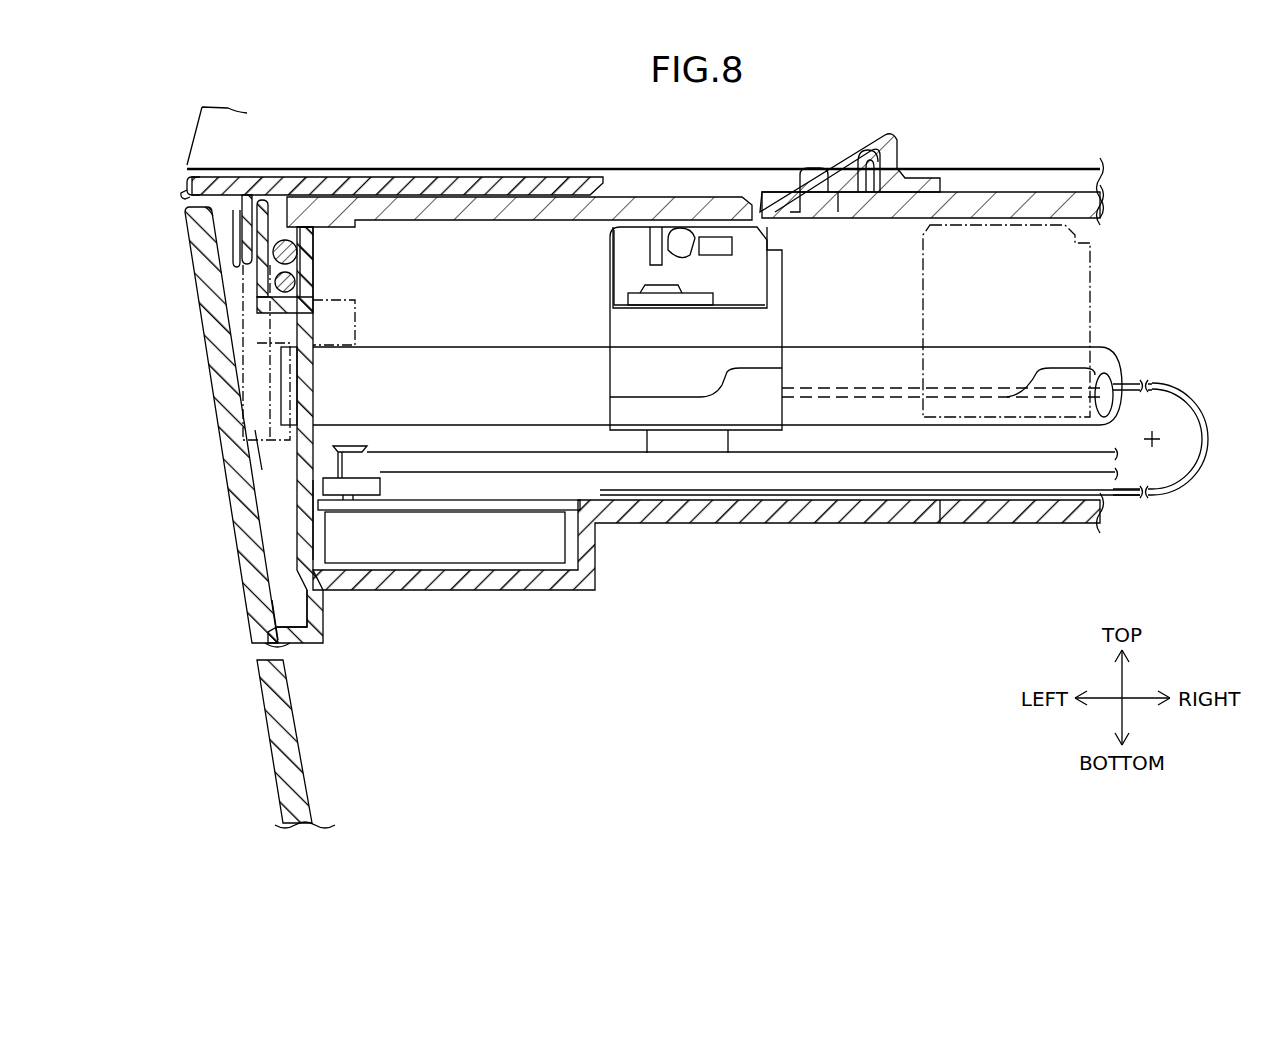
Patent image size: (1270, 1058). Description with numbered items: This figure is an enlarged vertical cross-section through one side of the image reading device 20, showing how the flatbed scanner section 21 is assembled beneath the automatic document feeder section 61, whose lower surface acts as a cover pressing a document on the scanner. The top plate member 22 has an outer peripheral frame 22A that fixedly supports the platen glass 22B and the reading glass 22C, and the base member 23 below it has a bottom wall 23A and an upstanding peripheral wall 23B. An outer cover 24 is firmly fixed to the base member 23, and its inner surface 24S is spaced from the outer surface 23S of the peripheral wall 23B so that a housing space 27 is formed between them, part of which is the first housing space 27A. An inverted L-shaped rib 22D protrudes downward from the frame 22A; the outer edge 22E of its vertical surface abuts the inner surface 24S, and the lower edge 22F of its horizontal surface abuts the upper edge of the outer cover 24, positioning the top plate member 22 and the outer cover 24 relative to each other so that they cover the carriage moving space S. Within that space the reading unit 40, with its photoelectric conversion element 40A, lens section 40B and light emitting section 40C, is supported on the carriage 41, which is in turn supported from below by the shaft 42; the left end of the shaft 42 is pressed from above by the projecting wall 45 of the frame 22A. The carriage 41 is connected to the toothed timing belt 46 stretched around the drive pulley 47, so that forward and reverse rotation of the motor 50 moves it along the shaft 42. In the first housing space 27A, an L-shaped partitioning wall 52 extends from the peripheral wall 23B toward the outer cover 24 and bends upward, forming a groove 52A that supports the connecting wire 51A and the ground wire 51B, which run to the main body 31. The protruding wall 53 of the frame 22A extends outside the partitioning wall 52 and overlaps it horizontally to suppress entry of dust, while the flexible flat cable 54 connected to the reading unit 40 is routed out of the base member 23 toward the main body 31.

The image reading device 20 is at (1108, 178).
The flatbed scanner section 21 is at (1115, 242).
The top plate member 22 is at (190, 186).
The outer peripheral frame 22A is at (435, 186).
The platen glass 22B is at (1043, 196).
The reading glass 22C is at (703, 196).
The inverted L-shaped rib 22D is at (228, 233).
The outer edge 22E is at (213, 237).
The lower edge 22F is at (210, 215).
The base member 23 is at (804, 522).
The bottom wall 23A is at (958, 512).
The peripheral wall 23B is at (293, 482).
The outer surface 23S is at (300, 530).
The outer cover 24 is at (207, 360).
The inner surface 24S is at (285, 578).
The housing space 27 is at (290, 608).
The first housing space 27A is at (263, 452).
The main body 31 is at (268, 708).
The reading unit 40 is at (628, 312).
The photoelectric conversion element 40A is at (655, 290).
The lens section 40B is at (657, 246).
The light emitting section 40C is at (735, 247).
The carriage 41 is at (783, 318).
The shaft 42 is at (886, 356).
The projecting wall 45 is at (355, 323).
The toothed timing belt 46 is at (870, 466).
The drive pulley 47 is at (340, 480).
The motor 50 is at (455, 530).
The connecting wire 51A is at (290, 255).
The ground wire 51B is at (292, 282).
The partitioning wall 52 is at (258, 292).
The groove 52A is at (273, 230).
The protruding wall 53 is at (238, 243).
The flexible flat cable 54 is at (1130, 386).
The automatic document feeder section 61 is at (205, 125).
The carriage moving space S is at (725, 492).